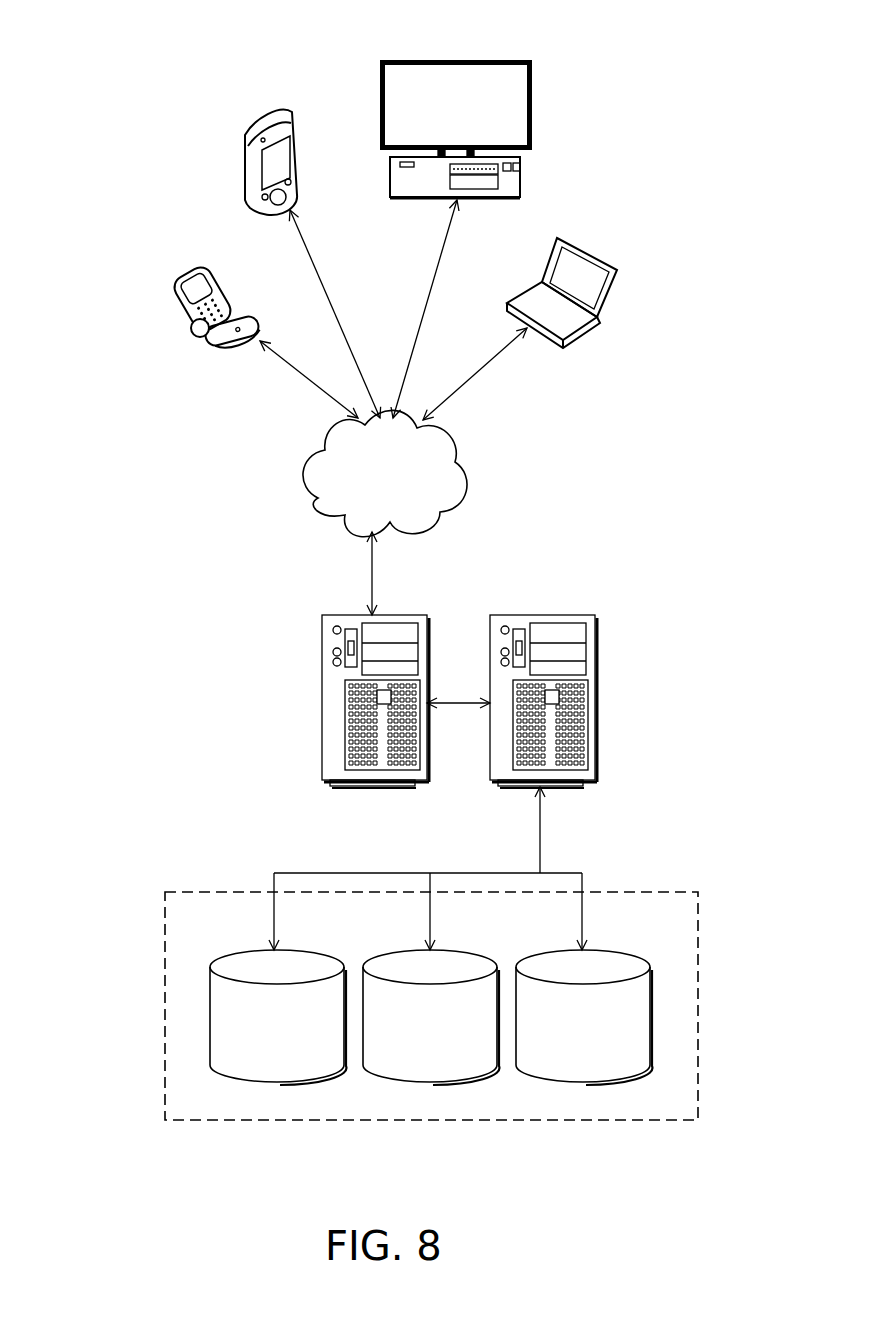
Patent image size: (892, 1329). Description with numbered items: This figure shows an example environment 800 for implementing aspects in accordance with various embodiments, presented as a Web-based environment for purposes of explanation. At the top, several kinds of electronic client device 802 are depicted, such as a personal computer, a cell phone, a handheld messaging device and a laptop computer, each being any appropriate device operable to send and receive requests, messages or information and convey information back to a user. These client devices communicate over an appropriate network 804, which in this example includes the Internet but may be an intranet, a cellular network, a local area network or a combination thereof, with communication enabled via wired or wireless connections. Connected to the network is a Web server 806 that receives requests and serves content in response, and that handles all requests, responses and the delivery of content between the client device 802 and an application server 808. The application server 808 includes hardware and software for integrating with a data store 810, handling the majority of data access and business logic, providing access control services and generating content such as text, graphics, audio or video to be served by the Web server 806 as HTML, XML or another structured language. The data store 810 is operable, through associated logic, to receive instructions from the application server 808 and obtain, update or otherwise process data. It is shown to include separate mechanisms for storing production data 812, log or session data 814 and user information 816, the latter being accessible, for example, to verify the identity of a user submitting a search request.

The environment 800 is at (730, 118).
The electronic client device 802 is at (335, 95).
The network 804 is at (312, 476).
The Web server 806 is at (322, 760).
The application server 808 is at (490, 770).
The data store 810 is at (198, 1122).
The production data 812 is at (297, 1088).
The log or session data 814 is at (447, 1088).
The user information 816 is at (603, 1088).